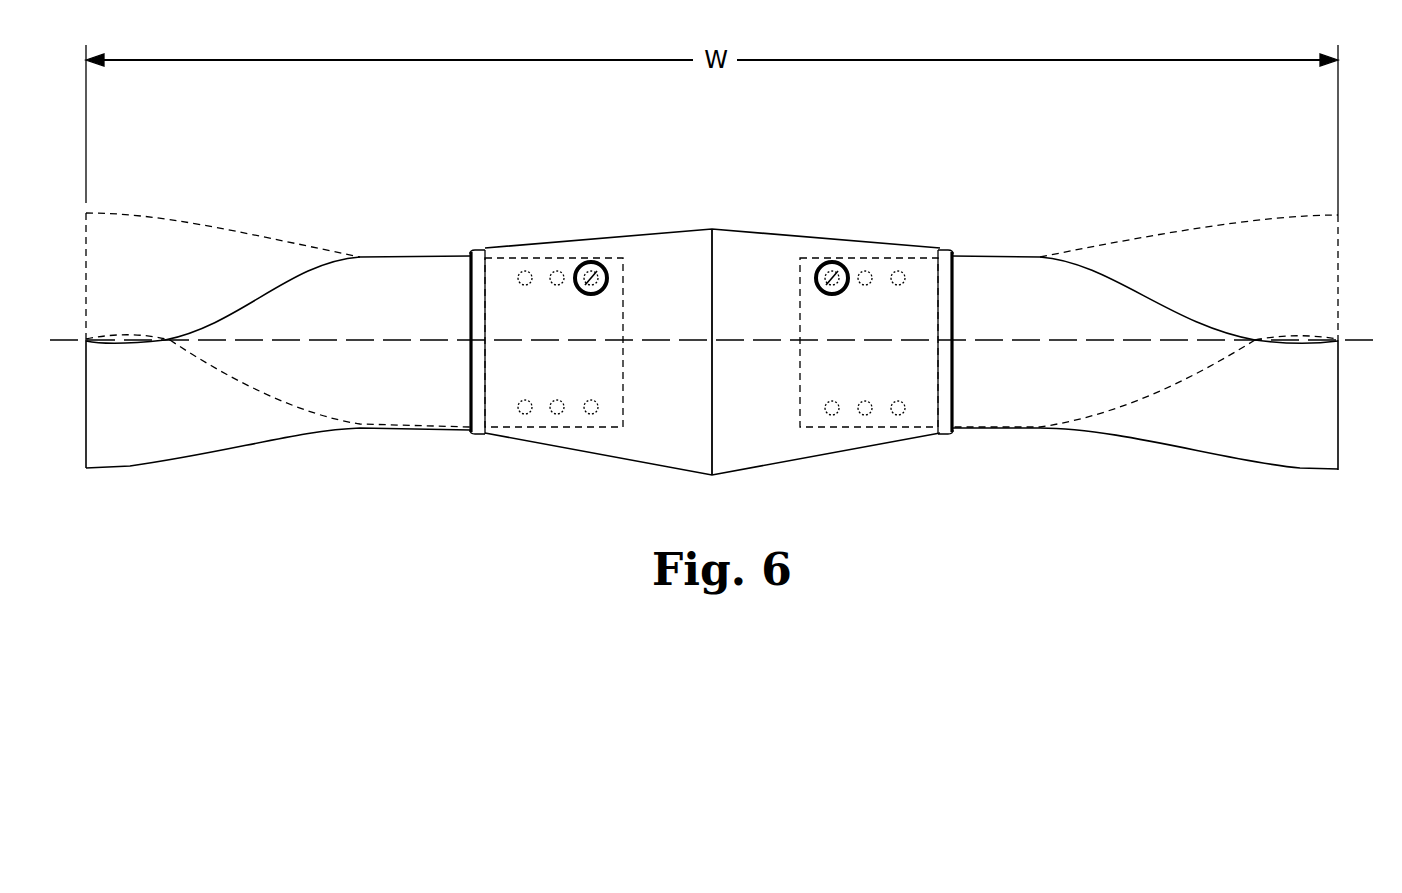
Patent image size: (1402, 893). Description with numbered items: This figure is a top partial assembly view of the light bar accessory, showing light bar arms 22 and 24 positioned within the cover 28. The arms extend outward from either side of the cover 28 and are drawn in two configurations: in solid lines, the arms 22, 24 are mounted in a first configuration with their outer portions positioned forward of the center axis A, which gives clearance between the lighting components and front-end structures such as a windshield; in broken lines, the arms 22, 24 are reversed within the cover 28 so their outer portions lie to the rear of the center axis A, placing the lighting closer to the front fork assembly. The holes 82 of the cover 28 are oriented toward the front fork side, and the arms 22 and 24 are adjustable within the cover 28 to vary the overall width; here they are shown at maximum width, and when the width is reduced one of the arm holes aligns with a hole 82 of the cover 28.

The light bar arm 22 is at (183, 224).
The light bar arm 24 is at (194, 462).
The cover 28 is at (713, 228).
The holes 82 is at (590, 266).
The center axis A is at (1355, 340).